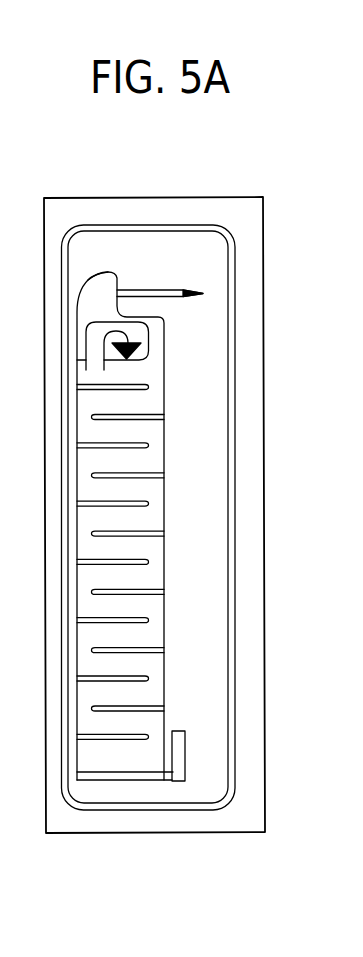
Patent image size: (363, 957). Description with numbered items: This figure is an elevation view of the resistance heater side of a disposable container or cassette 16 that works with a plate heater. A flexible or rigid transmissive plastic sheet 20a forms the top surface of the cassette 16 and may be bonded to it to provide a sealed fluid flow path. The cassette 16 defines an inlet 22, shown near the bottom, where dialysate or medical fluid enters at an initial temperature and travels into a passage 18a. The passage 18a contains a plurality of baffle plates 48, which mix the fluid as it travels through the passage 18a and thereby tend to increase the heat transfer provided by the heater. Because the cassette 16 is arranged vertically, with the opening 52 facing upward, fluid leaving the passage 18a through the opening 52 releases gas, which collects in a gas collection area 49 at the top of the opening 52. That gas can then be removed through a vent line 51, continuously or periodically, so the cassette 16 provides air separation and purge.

The cassette 16 is at (225, 197).
The transmissive plastic sheet 20a is at (195, 485).
The opening 52 is at (111, 313).
The gas collection area 49 is at (99, 279).
The vent line 51 is at (160, 289).
The baffle plates 48 is at (100, 442).
The passage 18a is at (134, 412).
The inlet 22 is at (186, 760).